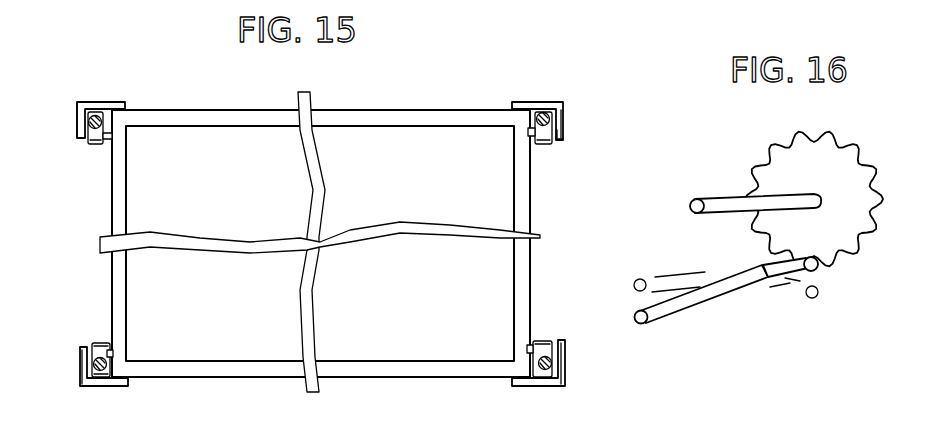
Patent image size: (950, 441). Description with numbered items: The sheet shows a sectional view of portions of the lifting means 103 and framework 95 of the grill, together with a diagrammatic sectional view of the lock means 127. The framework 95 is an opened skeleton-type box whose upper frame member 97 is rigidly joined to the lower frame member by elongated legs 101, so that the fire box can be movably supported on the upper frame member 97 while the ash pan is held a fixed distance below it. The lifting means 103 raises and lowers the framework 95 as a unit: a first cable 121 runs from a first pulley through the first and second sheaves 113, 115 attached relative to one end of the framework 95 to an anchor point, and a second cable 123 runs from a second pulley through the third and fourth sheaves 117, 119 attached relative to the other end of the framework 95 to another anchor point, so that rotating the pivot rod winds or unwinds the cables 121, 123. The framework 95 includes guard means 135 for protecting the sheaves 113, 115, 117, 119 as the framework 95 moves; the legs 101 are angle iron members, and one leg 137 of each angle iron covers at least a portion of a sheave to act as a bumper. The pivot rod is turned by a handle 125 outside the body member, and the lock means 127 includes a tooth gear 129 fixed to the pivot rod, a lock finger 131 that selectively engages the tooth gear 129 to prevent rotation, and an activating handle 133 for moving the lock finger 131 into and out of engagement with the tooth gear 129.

In FIG. 15, the framework 95 is at (533, 212).
In FIG. 15, the upper frame member 97 is at (392, 111).
In FIG. 15, the legs 101 is at (100, 103).
In FIG. 15, the lifting means 103 is at (568, 146).
In FIG. 15, the first sheave 113 is at (547, 146).
In FIG. 15, the second sheave 115 is at (548, 341).
In FIG. 15, the third sheave 117 is at (98, 148).
In FIG. 15, the fourth sheave 119 is at (100, 342).
In FIG. 15, the first cable 121 is at (553, 365).
In FIG. 15, the second cable 123 is at (96, 378).
In FIG. 16, the handle 125 is at (725, 199).
In FIG. 16, the lock means 127 is at (819, 310).
In FIG. 16, the tooth gear 129 is at (853, 148).
In FIG. 16, the lock finger 131 is at (817, 268).
In FIG. 16, the activating handle 133 is at (707, 297).
In FIG. 15, the guard means 135 is at (74, 121).
In FIG. 15, the leg of angle iron member 137 is at (86, 140).